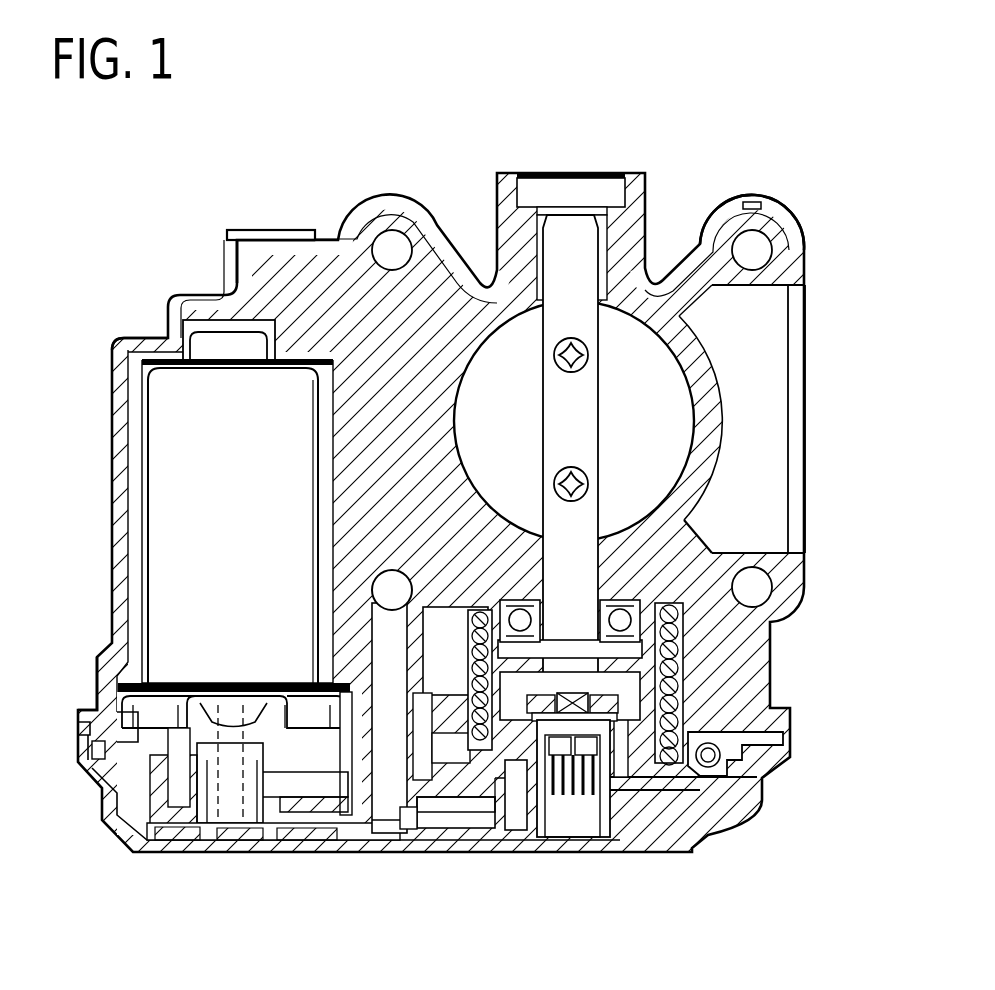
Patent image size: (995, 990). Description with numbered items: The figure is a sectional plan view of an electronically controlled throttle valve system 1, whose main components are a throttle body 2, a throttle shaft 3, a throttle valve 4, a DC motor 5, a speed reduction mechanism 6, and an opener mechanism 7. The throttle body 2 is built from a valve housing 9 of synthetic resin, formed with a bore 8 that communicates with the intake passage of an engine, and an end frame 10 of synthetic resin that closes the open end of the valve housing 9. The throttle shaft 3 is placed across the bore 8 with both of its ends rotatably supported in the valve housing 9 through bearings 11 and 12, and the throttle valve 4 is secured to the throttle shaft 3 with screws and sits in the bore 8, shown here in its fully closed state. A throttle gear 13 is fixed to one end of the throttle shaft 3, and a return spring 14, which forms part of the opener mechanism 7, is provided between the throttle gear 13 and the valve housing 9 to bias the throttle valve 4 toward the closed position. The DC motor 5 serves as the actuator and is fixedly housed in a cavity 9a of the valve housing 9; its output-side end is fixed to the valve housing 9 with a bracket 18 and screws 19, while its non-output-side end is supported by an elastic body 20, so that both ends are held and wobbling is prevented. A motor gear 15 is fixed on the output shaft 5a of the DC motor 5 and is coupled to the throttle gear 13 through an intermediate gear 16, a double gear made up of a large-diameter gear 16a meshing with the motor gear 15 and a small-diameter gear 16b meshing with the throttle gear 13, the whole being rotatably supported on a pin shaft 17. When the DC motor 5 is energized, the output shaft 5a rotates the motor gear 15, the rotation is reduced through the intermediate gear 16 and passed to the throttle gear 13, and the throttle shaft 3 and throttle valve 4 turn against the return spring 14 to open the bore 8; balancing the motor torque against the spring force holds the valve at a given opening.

The electronically controlled throttle valve system 1 is at (775, 200).
The throttle body 2 is at (328, 235).
The throttle shaft 3 is at (571, 248).
The throttle valve 4 is at (640, 383).
The DC motor 5 is at (165, 440).
The output shaft 5a is at (190, 840).
The speed reduction mechanism 6 is at (440, 805).
The opener mechanism 7 is at (690, 728).
The bore 8 is at (672, 422).
The valve housing 9 is at (806, 567).
The cavity 9a is at (136, 578).
The end frame 10 is at (708, 800).
The bearing 11 is at (655, 620).
The bearing 12 is at (672, 265).
The throttle gear 13 is at (630, 800).
The return spring 14 is at (668, 660).
The motor gear 15 is at (258, 822).
The intermediate gear 16 is at (458, 800).
The large-diameter gear 16a is at (505, 790).
The small-diameter gear 16b is at (330, 775).
The pin shaft 17 is at (390, 836).
The bracket 18 is at (133, 710).
The screws 19 is at (195, 740).
The elastic body 20 is at (153, 356).